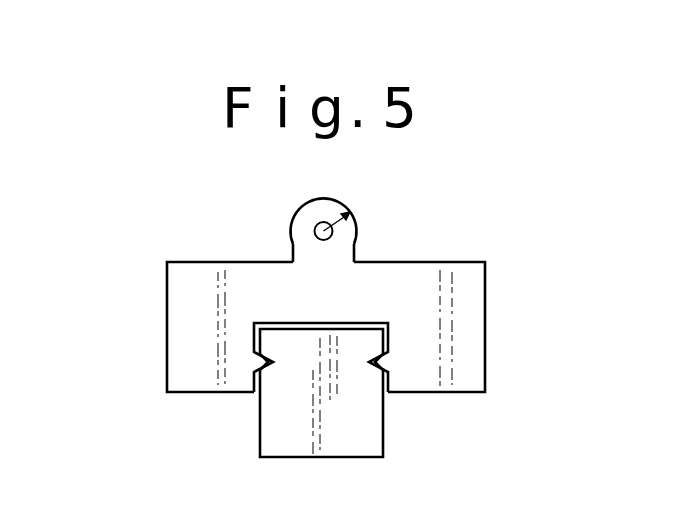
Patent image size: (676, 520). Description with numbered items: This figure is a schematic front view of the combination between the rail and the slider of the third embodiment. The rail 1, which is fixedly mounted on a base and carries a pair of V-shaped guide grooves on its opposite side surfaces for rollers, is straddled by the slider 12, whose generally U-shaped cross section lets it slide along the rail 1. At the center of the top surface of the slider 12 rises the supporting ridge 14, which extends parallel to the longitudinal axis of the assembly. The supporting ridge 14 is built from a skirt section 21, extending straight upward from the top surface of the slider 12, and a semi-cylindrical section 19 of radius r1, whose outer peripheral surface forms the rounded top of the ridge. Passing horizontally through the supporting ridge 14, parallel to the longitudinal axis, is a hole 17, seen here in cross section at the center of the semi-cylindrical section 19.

The rail 1 is at (362, 440).
The slider 12 is at (190, 328).
The supporting ridge 14 is at (343, 251).
The hole 17 is at (309, 216).
The semi-cylindrical section 19 is at (325, 212).
The skirt section 21 is at (308, 250).
The radius r1 is at (348, 222).